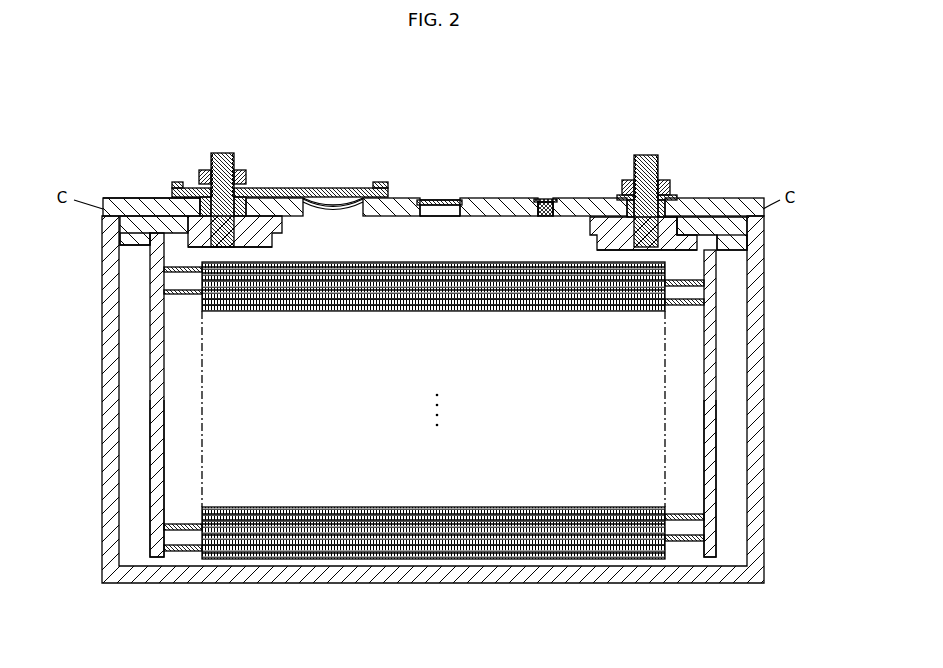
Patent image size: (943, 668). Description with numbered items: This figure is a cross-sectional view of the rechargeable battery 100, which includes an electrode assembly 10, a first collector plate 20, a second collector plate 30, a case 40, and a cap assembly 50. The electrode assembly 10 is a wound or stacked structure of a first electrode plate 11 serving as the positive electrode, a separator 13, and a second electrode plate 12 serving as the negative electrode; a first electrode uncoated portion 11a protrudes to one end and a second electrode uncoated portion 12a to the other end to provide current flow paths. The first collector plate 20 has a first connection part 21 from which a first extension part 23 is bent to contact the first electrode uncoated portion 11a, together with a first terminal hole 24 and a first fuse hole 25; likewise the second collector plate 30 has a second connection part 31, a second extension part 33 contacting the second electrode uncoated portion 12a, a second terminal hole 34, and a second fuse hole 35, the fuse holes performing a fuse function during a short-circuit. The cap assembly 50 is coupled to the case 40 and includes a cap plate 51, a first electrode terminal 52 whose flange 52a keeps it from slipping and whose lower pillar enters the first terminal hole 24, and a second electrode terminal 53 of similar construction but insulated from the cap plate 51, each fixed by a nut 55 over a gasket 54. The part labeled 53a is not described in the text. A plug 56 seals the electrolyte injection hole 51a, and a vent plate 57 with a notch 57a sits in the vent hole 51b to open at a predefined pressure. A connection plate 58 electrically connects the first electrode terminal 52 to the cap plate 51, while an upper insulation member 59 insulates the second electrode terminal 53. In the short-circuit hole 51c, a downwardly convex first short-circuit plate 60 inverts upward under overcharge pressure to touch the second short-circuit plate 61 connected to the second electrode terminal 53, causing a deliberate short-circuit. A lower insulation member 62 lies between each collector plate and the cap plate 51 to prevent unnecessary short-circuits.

The rechargeable battery 100 is at (776, 66).
The electrode assembly 10 is at (520, 562).
The first electrode plate 11 is at (588, 556).
The first electrode uncoated portion 11a is at (684, 541).
The second electrode plate 12 is at (310, 556).
The second electrode uncoated portion 12a is at (181, 552).
The separator 13 is at (447, 538).
The first collector plate 20 is at (718, 352).
The first connection part 21 is at (680, 230).
The first extension part 23 is at (711, 414).
The first terminal hole 24 is at (653, 250).
The first fuse hole 25 is at (722, 243).
The second collector plate 30 is at (148, 352).
The second connection part 31 is at (176, 203).
The second extension part 33 is at (160, 432).
The second terminal hole 34 is at (213, 249).
The second fuse hole 35 is at (188, 233).
The case 40 is at (760, 304).
The cap assembly 50 is at (508, 117).
The cap plate 51 is at (490, 199).
The electrolyte injection hole 51a is at (545, 217).
The vent hole 51b is at (433, 203).
The short-circuit hole 51c is at (356, 202).
The first electrode terminal 52 is at (647, 156).
The flange 52a is at (598, 225).
The second electrode terminal 53 is at (224, 153).
The negative terminal plate 53a is at (272, 232).
The gasket 54 is at (181, 184).
The nut 55 is at (238, 171).
The plug 56 is at (545, 200).
The vent plate 57 is at (455, 201).
The notch 57a is at (432, 200).
The connection plate 58 is at (674, 199).
The upper insulation member 59 is at (380, 183).
The first short-circuit plate 60 is at (333, 205).
The second short-circuit plate 61 is at (283, 189).
The lower insulation member 62 is at (121, 224).